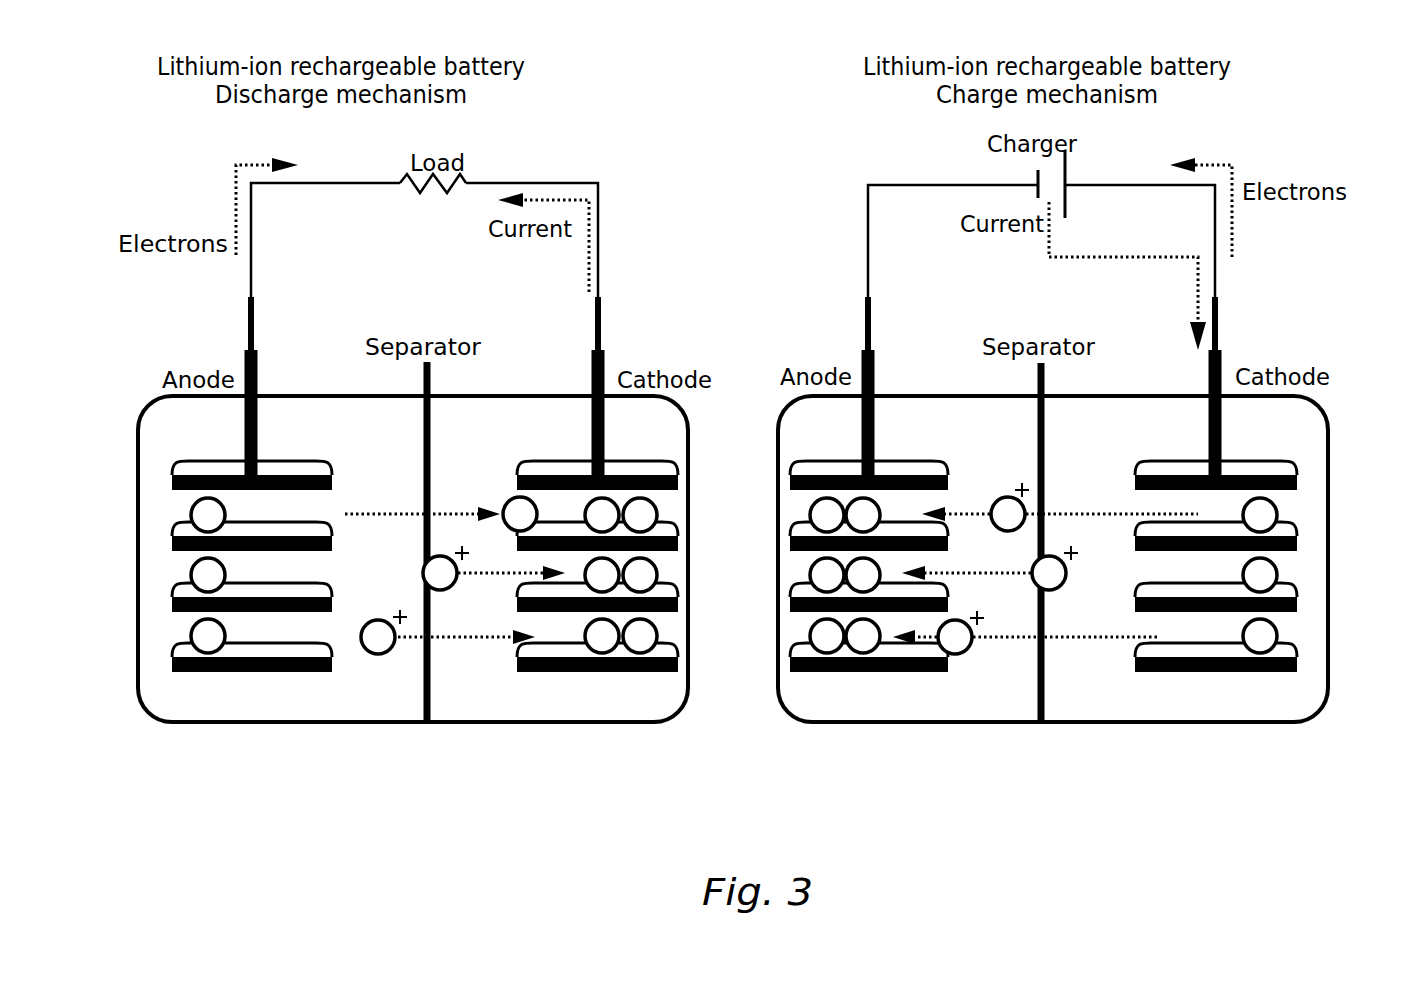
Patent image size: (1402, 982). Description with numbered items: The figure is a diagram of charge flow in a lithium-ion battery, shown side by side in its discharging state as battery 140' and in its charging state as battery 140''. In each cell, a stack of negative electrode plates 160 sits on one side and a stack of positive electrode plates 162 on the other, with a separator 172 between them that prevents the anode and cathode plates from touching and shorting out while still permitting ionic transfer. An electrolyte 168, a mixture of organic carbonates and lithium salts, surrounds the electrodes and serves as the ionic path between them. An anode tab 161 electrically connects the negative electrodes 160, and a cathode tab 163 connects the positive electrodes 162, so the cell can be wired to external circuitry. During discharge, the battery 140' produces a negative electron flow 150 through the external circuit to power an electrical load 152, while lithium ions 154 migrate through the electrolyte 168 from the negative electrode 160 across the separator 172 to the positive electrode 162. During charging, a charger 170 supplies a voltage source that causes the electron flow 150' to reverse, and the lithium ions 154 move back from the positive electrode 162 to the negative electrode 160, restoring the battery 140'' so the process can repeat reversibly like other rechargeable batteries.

The lithium-ion battery 140' is at (383, 524).
The lithium-ion battery 140'' is at (1090, 537).
The electron flow 150 is at (216, 206).
The electron flow 150' is at (1255, 207).
The electrical load 152 is at (428, 194).
The lithium ions 154 is at (505, 505).
The negative electrode 160 is at (172, 660).
The anode tab 161 is at (245, 348).
The positive electrode 162 is at (678, 660).
The cathode tab 163 is at (602, 348).
The electrolyte 168 is at (372, 698).
The charger 170 is at (1045, 170).
The separator 172 is at (432, 383).